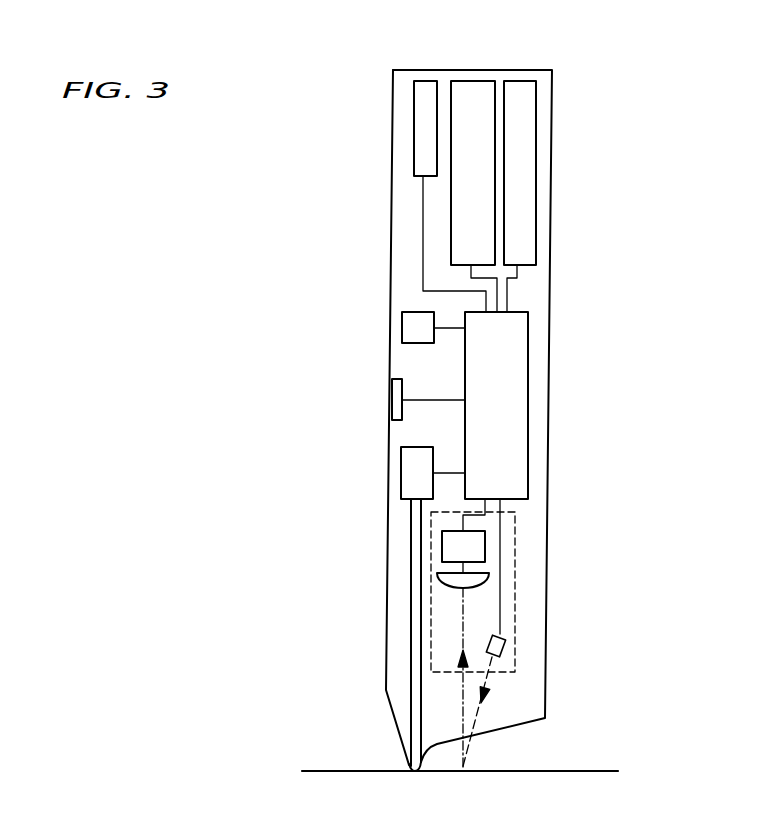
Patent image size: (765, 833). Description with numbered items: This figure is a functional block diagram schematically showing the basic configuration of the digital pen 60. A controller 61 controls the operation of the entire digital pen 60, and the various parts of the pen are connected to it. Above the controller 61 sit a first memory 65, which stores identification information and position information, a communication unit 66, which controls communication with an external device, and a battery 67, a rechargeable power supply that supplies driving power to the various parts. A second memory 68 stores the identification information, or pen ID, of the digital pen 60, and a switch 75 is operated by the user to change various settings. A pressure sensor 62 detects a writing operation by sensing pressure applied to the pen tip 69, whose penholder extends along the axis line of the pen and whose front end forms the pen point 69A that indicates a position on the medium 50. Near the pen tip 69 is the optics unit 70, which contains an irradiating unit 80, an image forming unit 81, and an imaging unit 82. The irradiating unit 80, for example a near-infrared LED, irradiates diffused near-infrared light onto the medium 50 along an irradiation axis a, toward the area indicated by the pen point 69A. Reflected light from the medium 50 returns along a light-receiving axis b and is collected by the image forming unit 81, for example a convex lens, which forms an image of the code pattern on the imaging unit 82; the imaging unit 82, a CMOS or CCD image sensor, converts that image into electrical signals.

The digital pen 60 is at (336, 109).
The first memory 65 is at (469, 90).
The communication unit 66 is at (414, 145).
The battery 67 is at (527, 142).
The controller 61 is at (513, 372).
The second memory 68 is at (403, 325).
The switch 75 is at (393, 396).
The pressure sensor 62 is at (410, 473).
The pen tip 69 is at (411, 724).
The pen point 69A is at (402, 757).
The optics unit 70 is at (515, 530).
The imaging unit 82 is at (475, 542).
The image forming unit 81 is at (477, 580).
The irradiating unit 80 is at (503, 637).
The medium 50 is at (582, 770).
The irradiation axis a is at (468, 744).
The light-receiving axis b is at (459, 722).